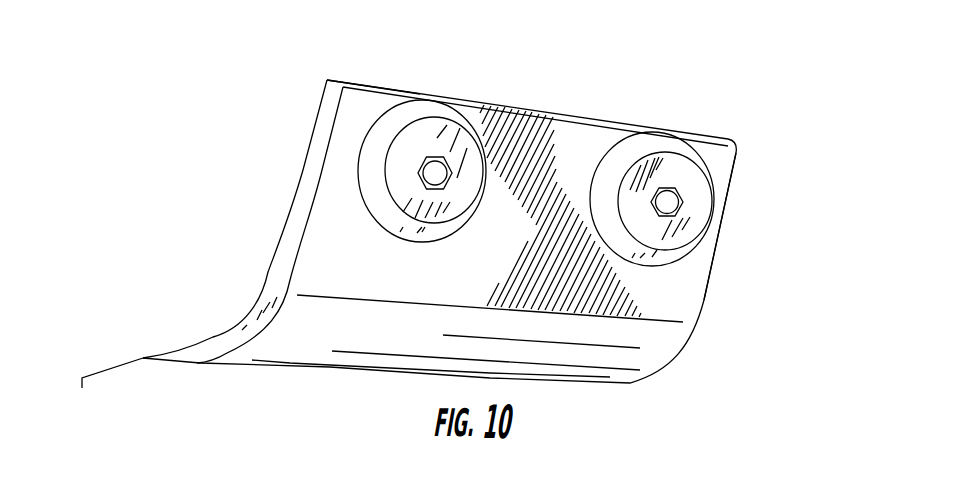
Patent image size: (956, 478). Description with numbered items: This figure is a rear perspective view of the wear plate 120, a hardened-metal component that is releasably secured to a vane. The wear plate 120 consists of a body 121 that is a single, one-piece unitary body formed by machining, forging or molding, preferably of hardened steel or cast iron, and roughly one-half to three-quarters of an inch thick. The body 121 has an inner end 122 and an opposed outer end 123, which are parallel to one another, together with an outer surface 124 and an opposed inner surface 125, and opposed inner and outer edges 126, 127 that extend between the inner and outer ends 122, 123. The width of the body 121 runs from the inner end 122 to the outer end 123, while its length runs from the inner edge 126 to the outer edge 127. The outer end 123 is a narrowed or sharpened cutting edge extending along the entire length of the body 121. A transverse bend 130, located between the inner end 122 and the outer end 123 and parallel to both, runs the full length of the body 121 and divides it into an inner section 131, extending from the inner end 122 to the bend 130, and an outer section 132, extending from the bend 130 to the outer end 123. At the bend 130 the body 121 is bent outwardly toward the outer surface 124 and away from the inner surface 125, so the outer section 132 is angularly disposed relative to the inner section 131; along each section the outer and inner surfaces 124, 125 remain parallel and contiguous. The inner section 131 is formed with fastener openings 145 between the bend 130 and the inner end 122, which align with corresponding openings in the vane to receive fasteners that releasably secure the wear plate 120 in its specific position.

The wear plate 120 is at (740, 175).
The body 121 is at (368, 105).
The inner end 122 is at (502, 110).
The outer end 123 is at (106, 392).
The outer surface 124 is at (306, 150).
The inner surface 125 is at (652, 292).
The inner edge 126 is at (299, 208).
The outer edge 127 is at (718, 243).
The bend 130 is at (290, 312).
The inner section 131 is at (558, 156).
The outer section 132 is at (389, 372).
The fastener openings 145 is at (438, 158).